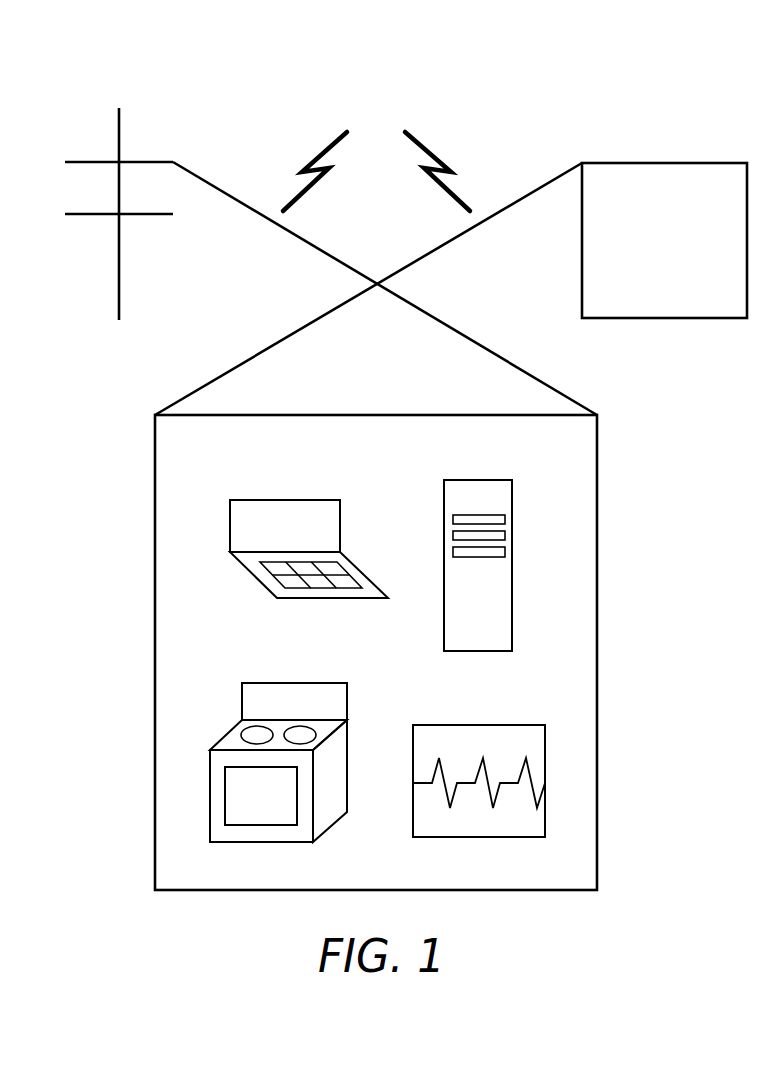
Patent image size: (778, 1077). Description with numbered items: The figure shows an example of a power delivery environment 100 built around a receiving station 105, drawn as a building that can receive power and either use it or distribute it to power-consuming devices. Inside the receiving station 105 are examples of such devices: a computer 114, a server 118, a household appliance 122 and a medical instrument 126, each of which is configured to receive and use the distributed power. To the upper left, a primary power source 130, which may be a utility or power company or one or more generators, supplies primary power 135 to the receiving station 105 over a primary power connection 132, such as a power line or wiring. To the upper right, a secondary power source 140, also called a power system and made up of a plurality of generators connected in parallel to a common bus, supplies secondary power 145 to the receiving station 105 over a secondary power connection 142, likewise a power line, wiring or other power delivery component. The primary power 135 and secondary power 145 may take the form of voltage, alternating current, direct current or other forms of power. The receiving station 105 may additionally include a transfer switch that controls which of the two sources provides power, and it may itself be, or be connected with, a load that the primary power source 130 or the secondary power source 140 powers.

The power delivery environment 100 is at (654, 46).
The receiving station 105 is at (597, 654).
The computer 114 is at (285, 500).
The server 118 is at (478, 480).
The household appliance 122 is at (295, 683).
The medical instrument 126 is at (478, 725).
The primary power source 130 is at (119, 130).
The primary power connection 132 is at (267, 219).
The primary power 135 is at (311, 158).
The secondary power source 140 is at (665, 162).
The secondary power connection 142 is at (487, 219).
The secondary power 145 is at (444, 158).